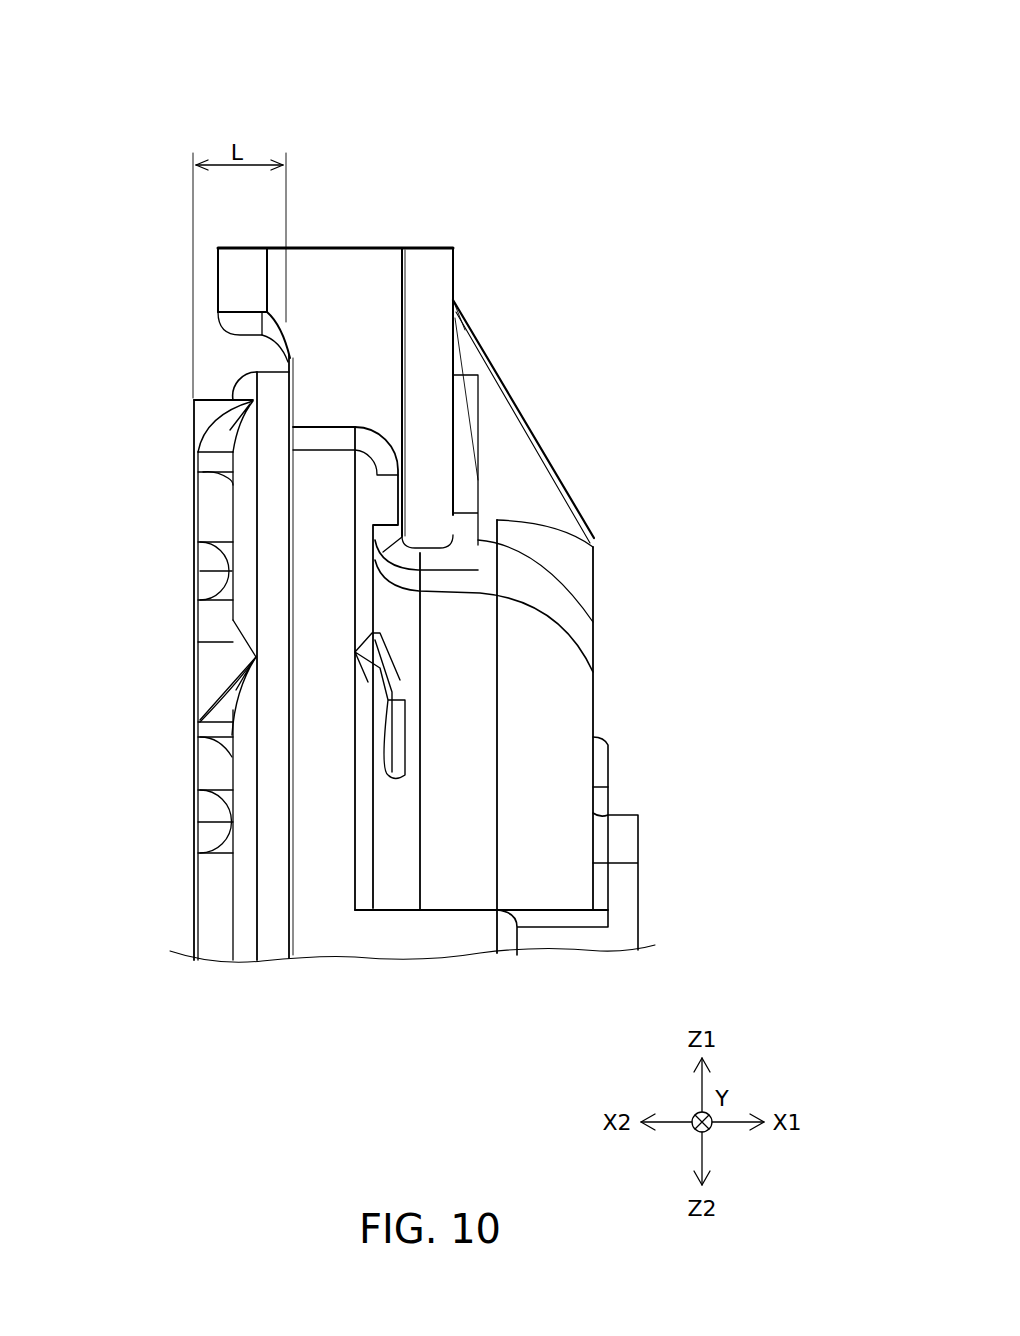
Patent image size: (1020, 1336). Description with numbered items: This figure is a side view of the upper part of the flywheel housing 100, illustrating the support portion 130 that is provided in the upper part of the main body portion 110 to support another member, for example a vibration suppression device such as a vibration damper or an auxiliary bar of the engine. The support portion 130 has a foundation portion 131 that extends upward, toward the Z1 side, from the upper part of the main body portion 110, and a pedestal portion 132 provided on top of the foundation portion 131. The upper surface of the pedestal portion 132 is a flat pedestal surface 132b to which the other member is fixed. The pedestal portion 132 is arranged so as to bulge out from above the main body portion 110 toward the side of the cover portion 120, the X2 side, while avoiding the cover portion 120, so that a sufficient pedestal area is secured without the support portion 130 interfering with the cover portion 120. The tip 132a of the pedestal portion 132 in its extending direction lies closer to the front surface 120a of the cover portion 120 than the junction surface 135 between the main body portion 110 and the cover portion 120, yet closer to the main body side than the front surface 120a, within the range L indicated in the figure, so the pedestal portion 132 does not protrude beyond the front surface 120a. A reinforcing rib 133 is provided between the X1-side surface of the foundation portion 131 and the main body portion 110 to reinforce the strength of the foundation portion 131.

The flywheel housing 100 is at (471, 113).
The main body portion 110 is at (593, 703).
The cover portion 120 is at (194, 684).
The front surface 120a is at (192, 404).
The support portion 130 is at (462, 233).
The foundation portion 131 is at (340, 385).
The pedestal portion 132 is at (330, 284).
The tip 132a is at (218, 288).
The pedestal surface 132b is at (338, 245).
The reinforcing rib 133 is at (512, 467).
The junction surface 135 is at (283, 920).